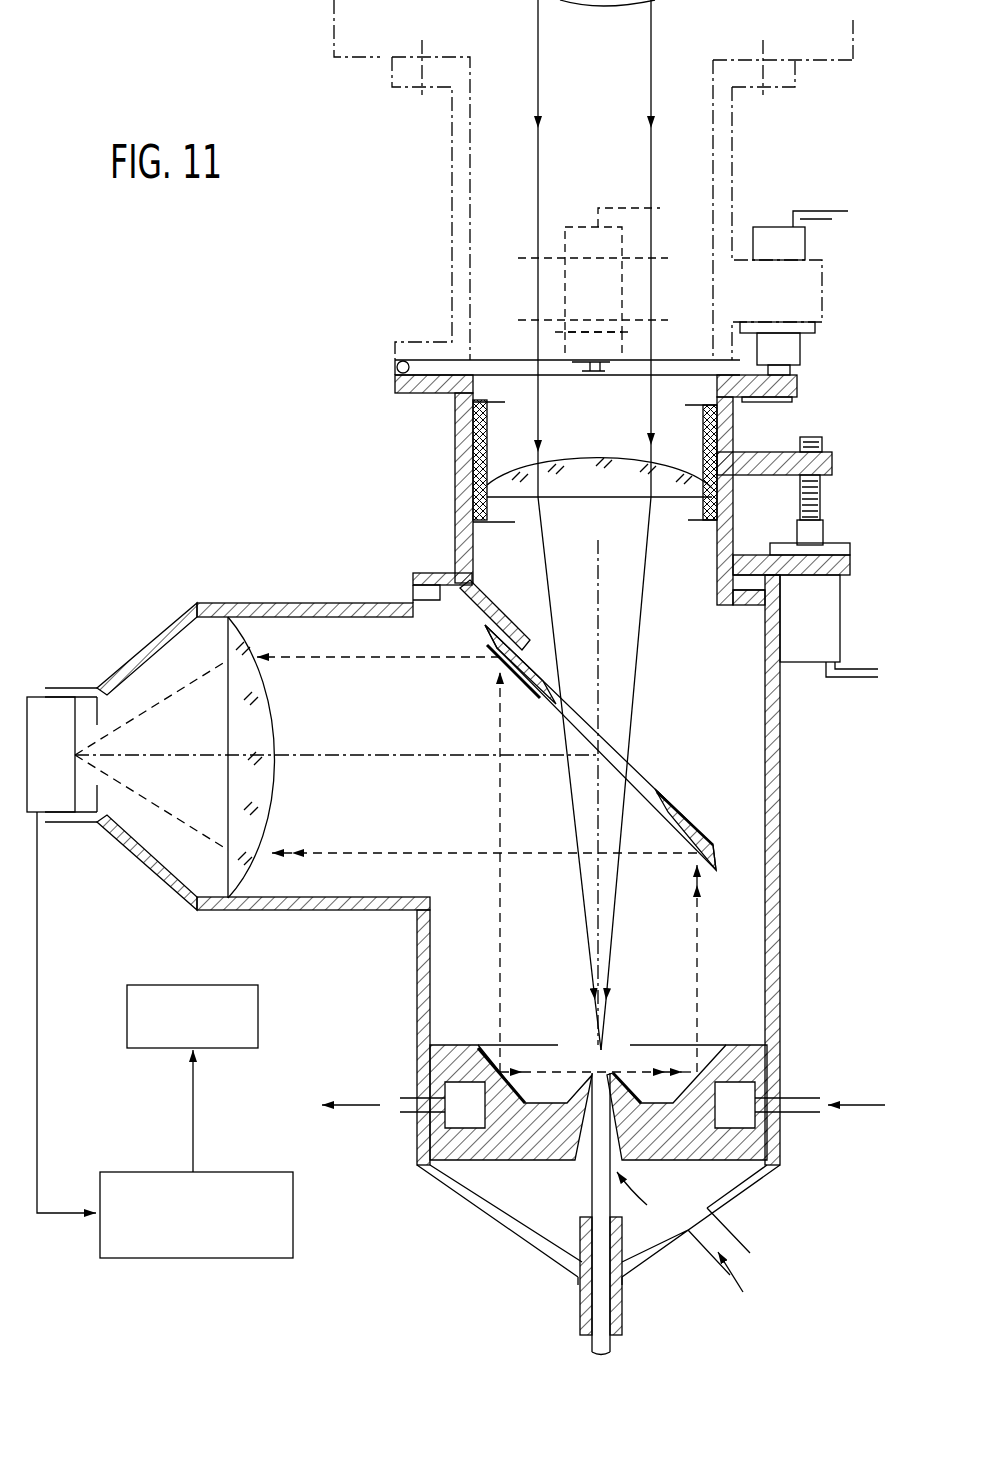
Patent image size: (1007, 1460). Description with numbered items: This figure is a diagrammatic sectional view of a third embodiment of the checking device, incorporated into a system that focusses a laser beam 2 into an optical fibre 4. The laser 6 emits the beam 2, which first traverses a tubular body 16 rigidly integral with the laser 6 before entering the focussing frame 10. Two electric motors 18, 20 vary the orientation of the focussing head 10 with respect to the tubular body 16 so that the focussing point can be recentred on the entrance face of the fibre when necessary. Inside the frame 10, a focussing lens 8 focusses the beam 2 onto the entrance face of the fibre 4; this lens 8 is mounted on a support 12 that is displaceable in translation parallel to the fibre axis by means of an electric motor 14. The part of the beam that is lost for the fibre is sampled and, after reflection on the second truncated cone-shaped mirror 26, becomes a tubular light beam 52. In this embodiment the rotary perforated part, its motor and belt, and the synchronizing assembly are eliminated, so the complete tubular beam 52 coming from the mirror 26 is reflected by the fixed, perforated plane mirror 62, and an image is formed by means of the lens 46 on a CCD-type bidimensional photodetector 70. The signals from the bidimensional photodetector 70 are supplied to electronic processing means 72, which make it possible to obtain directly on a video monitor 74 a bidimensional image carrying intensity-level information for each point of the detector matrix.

The laser beam 2 is at (652, 52).
The optical fibre 4 is at (592, 1345).
The laser 6 is at (380, 58).
The focussing lens 8 is at (668, 500).
The focussing frame 10 is at (303, 601).
The support 12 is at (478, 457).
The electric motor 14 is at (830, 637).
The tubular body 16 is at (452, 246).
The electric motor 18 is at (656, 233).
The electric motor 20 is at (797, 247).
The second truncated cone-shaped mirror 26 is at (486, 1056).
The focussing lens 46 is at (253, 820).
The tubular light beam 52 is at (497, 905).
The fixed perforated plane mirror 62 is at (526, 688).
The bidimensional photodetector 70 is at (58, 705).
The electronic processing means 72 is at (243, 1252).
The video monitor 74 is at (252, 1023).